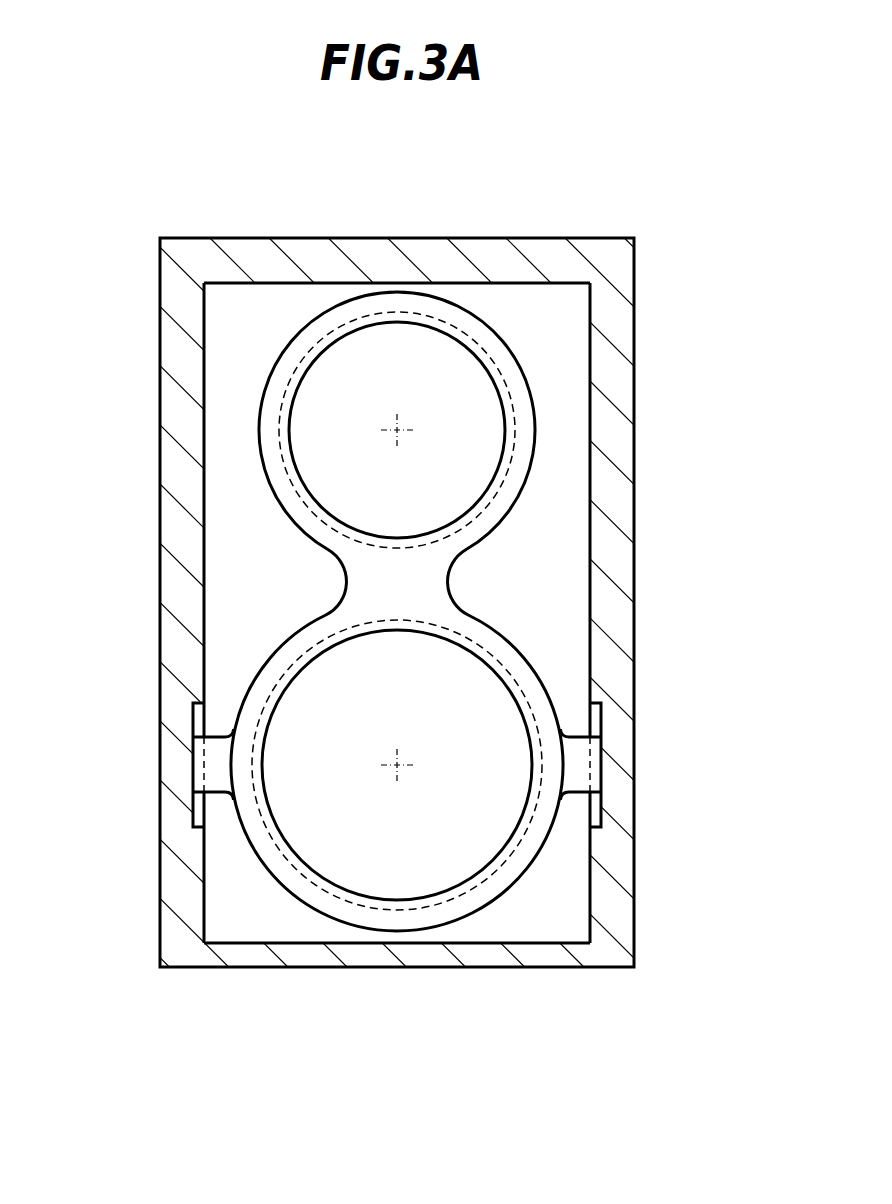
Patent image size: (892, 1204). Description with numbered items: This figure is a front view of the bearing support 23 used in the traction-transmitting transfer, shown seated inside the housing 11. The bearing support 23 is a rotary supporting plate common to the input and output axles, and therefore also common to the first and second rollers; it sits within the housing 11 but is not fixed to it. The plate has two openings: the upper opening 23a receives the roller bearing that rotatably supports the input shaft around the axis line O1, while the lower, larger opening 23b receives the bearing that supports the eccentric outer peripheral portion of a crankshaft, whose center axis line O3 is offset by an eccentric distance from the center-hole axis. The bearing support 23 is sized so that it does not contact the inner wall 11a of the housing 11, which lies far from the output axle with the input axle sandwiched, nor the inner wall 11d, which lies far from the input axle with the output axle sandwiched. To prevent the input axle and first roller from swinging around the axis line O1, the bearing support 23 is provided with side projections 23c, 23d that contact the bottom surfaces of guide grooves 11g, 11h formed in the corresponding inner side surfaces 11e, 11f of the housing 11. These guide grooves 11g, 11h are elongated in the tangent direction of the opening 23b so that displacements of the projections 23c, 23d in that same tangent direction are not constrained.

The housing 11 is at (499, 226).
The inner wall of housing 11a is at (275, 283).
The inner wall of housing 11d is at (276, 943).
The inner side surface of housing 11e is at (212, 594).
The inner side surface of housing 11f is at (580, 547).
The guide groove 11g is at (198, 718).
The guide groove 11h is at (597, 718).
The bearing support 23 is at (520, 326).
The opening 23a is at (500, 387).
The opening 23b is at (514, 708).
The projection 23c is at (212, 803).
The projection 23d is at (588, 805).
The axis line of input axle O1 is at (395, 432).
The center axis line of eccentric outer peripheral portions O3 is at (395, 767).